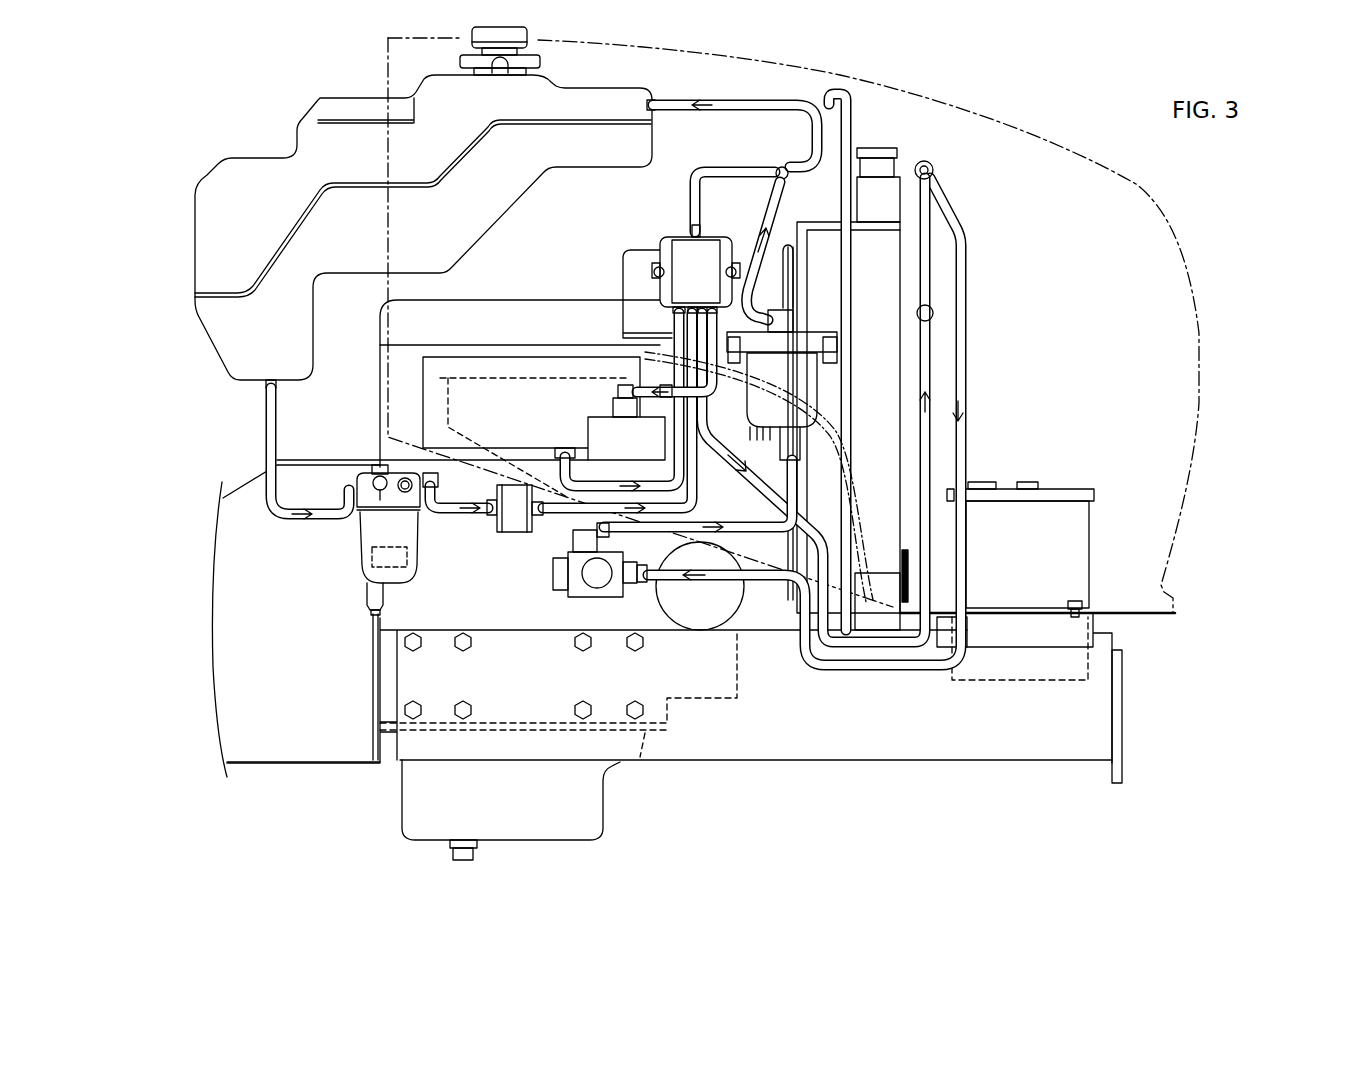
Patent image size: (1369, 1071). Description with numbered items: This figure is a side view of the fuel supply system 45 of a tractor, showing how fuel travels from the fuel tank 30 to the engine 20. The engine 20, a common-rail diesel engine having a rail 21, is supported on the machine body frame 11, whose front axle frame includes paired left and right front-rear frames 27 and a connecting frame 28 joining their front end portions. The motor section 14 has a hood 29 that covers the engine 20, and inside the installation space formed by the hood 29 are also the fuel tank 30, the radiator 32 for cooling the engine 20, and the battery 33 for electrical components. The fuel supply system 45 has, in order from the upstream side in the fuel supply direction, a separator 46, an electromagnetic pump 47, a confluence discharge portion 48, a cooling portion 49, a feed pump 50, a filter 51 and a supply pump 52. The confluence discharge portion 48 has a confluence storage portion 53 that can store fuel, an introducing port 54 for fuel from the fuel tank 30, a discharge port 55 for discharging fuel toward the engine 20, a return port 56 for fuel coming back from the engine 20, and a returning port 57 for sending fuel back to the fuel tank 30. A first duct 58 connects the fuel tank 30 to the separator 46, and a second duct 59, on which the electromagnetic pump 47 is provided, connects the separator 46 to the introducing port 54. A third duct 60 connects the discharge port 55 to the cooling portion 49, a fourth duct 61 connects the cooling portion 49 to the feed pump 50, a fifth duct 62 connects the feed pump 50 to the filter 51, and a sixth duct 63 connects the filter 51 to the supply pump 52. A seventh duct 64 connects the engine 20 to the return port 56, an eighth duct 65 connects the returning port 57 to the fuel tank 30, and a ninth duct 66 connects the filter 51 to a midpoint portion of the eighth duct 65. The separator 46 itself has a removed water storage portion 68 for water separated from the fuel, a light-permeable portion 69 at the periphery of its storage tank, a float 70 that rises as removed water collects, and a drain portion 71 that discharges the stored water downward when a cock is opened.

The machine body frame 11 is at (813, 782).
The motor section 14 is at (751, 86).
The engine 20 is at (539, 310).
The rail 21 is at (531, 437).
The front-rear frames 27 is at (1037, 745).
The connecting frame 28 is at (1122, 713).
The hood 29 is at (966, 105).
The fuel tank 30 is at (257, 150).
The radiator 32 is at (872, 147).
The battery 33 is at (1057, 515).
The fuel supply system 45 is at (1003, 237).
The separator 46 is at (370, 612).
The electromagnetic pump 47 is at (510, 490).
The confluence discharge portion 48 is at (655, 253).
The cooling portion 49 is at (918, 275).
The feed pump 50 is at (580, 587).
The filter 51 is at (797, 375).
The supply pump 52 is at (627, 440).
The confluence storage portion 53 is at (656, 268).
The introducing port 54 is at (682, 268).
The discharge port 55 is at (740, 300).
The return port 56 is at (662, 308).
The returning port 57 is at (690, 230).
The first duct 58 is at (260, 428).
The second duct 59 is at (560, 507).
The third duct 60 is at (917, 445).
The fourth duct 61 is at (957, 445).
The fifth duct 62 is at (713, 518).
The sixth duct 63 is at (653, 358).
The seventh duct 64 is at (558, 480).
The eighth duct 65 is at (790, 170).
The ninth duct 66 is at (778, 203).
The removed water storage portion 68 is at (397, 538).
The light-permeable portion 69 is at (417, 560).
The float 70 is at (398, 578).
The drain portion 71 is at (370, 598).